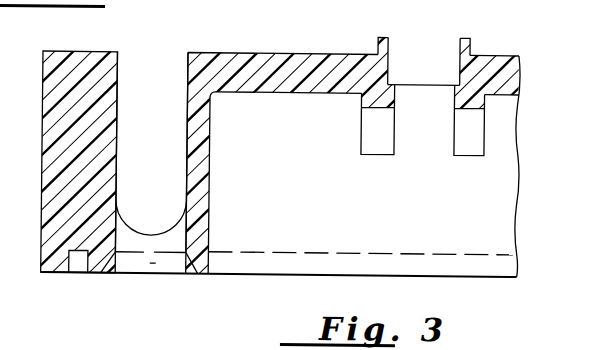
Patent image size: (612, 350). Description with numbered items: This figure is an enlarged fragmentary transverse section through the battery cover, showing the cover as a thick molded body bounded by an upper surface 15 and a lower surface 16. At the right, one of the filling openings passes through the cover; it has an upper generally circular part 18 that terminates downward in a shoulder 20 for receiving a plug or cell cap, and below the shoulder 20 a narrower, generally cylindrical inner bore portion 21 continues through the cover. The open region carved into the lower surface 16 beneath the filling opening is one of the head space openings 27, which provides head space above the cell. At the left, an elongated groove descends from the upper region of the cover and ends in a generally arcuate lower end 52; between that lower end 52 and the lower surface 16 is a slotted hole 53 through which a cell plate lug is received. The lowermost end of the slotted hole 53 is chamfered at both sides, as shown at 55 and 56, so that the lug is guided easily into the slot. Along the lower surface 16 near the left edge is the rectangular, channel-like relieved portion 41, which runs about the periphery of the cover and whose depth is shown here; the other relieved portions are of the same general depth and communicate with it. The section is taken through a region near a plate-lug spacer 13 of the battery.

The plate-lug spacer 13 is at (473, 35).
The upper surface 15 is at (246, 50).
The lower surface 16 is at (61, 271).
The upper generally circular part 18 is at (406, 42).
The shoulder 20 is at (458, 79).
The inner bore portion 21 is at (397, 129).
The head space opening 27 is at (341, 208).
The relieved portion 41 is at (77, 266).
The lower end of groove 52 is at (132, 231).
The slotted hole 53 is at (155, 263).
The chamfer 55 is at (182, 272).
The chamfer 56 is at (112, 261).